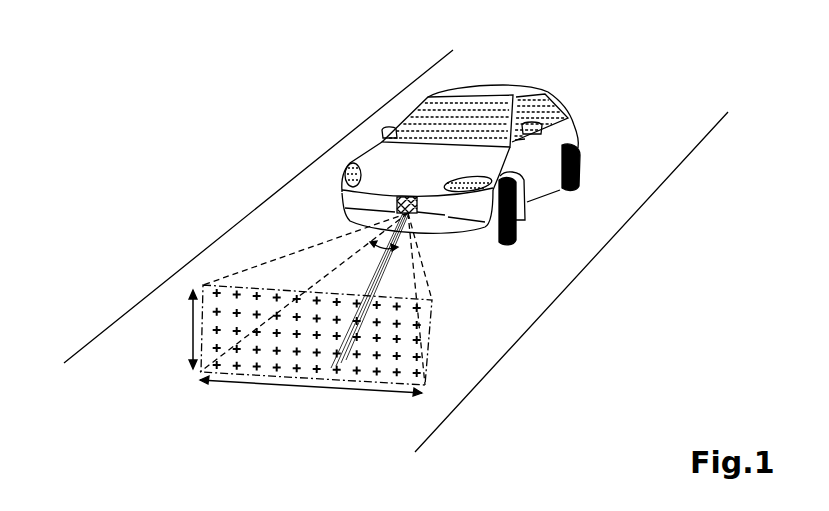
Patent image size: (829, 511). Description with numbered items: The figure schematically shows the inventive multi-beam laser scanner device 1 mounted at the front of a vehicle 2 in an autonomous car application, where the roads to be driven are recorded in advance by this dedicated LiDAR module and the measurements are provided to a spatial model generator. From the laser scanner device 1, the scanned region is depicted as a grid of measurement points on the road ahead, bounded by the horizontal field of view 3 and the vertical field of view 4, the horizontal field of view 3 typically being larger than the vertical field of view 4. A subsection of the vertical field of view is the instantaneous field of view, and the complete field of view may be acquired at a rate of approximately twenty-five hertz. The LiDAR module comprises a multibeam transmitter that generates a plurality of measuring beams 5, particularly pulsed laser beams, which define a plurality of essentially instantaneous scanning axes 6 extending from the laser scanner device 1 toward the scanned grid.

The laser scanner device 1 is at (398, 201).
The vehicle 2 is at (507, 92).
The horizontal field of view 3 is at (316, 353).
The vertical field of view 4 is at (175, 329).
The measuring beams 5 is at (228, 278).
The instantaneous scanning axes 6 is at (367, 258).